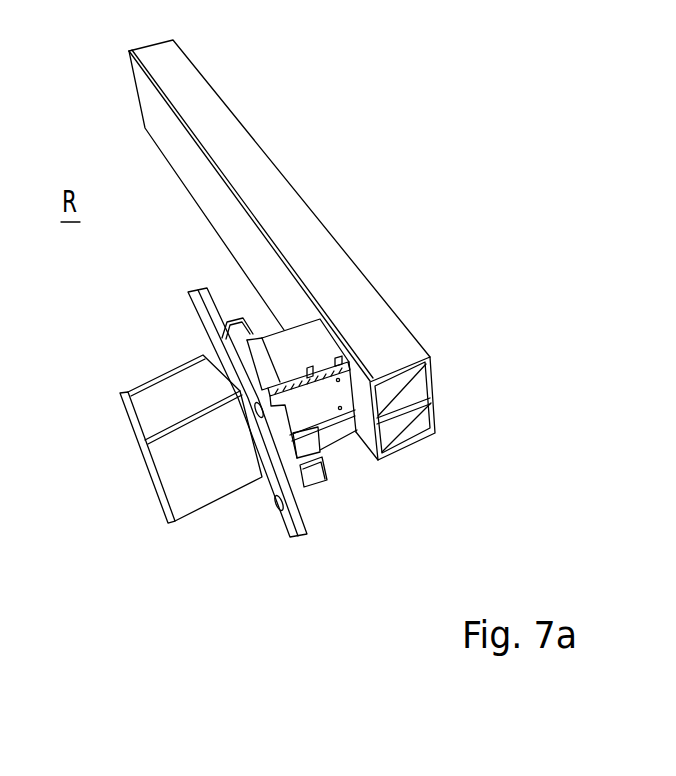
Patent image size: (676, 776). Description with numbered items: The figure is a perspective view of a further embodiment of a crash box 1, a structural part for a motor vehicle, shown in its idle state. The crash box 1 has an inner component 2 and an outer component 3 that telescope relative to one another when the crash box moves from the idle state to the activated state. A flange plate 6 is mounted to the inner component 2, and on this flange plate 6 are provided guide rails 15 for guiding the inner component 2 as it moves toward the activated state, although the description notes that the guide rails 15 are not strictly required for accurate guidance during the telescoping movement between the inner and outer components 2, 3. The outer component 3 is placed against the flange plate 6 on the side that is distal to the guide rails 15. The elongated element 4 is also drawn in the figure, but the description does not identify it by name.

The crash box 1 is at (110, 348).
The inner component 2 is at (338, 395).
The outer component 3 is at (200, 477).
The beam (hollow profile) 4 is at (282, 200).
The flange plate 6 is at (298, 522).
The guide rails 15 is at (256, 362).